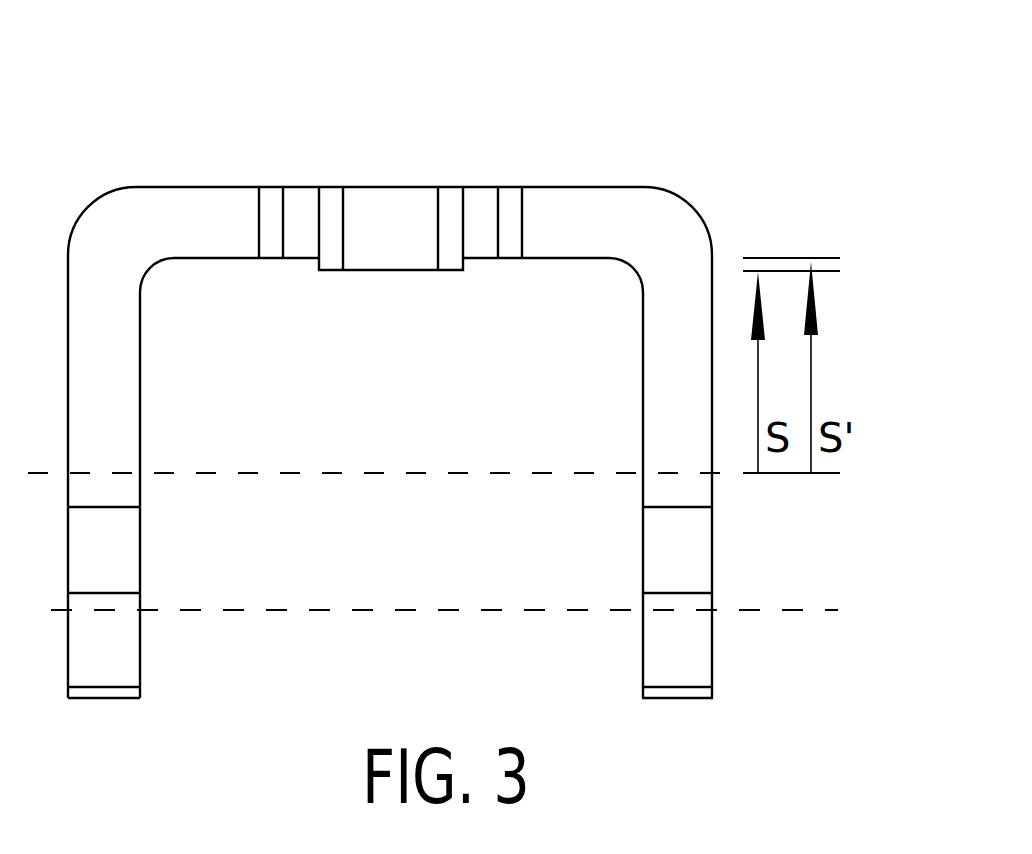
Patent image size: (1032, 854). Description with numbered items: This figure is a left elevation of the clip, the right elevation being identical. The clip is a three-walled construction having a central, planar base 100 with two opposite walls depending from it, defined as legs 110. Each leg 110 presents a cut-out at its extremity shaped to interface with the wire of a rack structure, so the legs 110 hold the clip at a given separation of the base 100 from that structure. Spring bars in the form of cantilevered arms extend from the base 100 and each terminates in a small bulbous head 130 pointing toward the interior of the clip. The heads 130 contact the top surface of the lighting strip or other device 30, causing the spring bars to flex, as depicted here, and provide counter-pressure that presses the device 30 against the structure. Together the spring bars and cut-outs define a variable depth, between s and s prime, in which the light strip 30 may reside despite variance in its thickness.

The base 100 is at (577, 207).
The legs 110 is at (95, 652).
The bulbous head 130 is at (421, 270).
The device 30 is at (360, 488).